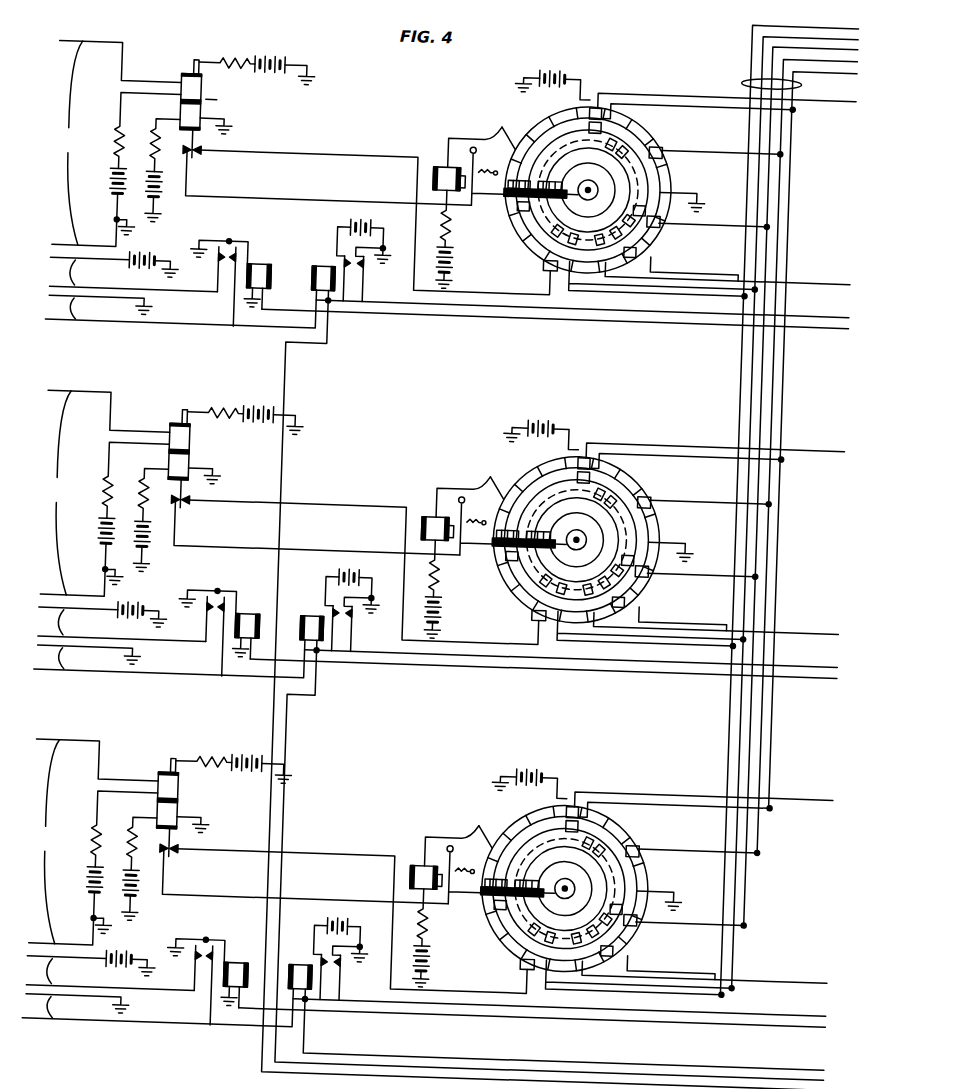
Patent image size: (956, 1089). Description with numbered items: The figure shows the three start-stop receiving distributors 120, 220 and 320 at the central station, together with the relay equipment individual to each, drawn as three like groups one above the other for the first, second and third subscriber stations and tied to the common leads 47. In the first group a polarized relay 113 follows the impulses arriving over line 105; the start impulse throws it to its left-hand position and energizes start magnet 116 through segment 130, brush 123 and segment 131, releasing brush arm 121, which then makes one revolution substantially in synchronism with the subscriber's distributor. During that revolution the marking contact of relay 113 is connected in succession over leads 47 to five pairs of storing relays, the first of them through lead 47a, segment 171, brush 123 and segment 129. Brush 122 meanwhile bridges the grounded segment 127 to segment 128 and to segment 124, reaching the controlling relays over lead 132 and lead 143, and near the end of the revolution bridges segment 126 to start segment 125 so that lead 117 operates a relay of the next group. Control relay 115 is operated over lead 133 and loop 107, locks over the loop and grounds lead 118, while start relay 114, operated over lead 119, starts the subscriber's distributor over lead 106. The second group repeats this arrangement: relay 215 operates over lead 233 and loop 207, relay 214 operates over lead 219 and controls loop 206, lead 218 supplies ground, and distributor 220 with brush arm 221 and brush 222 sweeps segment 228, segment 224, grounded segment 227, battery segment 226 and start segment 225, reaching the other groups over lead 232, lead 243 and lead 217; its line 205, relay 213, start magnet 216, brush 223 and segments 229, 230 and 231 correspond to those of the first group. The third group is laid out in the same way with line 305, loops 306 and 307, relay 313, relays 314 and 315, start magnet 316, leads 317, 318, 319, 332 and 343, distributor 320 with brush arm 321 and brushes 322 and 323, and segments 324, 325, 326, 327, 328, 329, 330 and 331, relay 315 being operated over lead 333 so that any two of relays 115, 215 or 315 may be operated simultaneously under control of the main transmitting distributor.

The leads 47 is at (740, 77).
The lead 47a is at (747, 44).
The line 105 is at (117, 144).
The lead 106 is at (134, 270).
The loop 107 is at (180, 305).
The relay 113 is at (180, 90).
The start relay 114 is at (264, 274).
The subscribers' control relay 115 is at (324, 274).
The start magnet 116 is at (438, 170).
The lead 117 is at (638, 93).
The lead 118 is at (410, 309).
The lead 119 is at (480, 321).
The start-stop receiving distributor 120 is at (590, 170).
The brush arm 121 is at (563, 188).
The brush 122 is at (540, 236).
The brush 123 is at (526, 214).
The segment 124 is at (646, 212).
The start segment 125 is at (585, 127).
The segment 126 is at (666, 140).
The segment 127 is at (646, 219).
The segment 128 is at (644, 246).
The segment 129 is at (662, 186).
The segment 130 is at (522, 156).
The segment 131 is at (540, 148).
The lead 132 is at (690, 321).
The lead 133 is at (293, 390).
The lead 143 is at (806, 276).
The segment 171 is at (546, 266).
The input signal leads 205 is at (105, 494).
The loop 206 is at (122, 620).
The loop 207 is at (169, 655).
The polarized relay 213 is at (193, 433).
The relay 214 is at (226, 632).
The relay 215 is at (334, 610).
The stepping magnet 216 is at (440, 554).
The lead 217 is at (715, 440).
The lead 218 is at (571, 675).
The lead 219 is at (543, 679).
The receiving distributor 220 is at (578, 507).
The brush arm 221 is at (512, 528).
The brush 222 is at (606, 615).
The contact segment 223 is at (485, 568).
The segment 224 is at (664, 579).
The start segment 225 is at (545, 465).
The segment 226 is at (704, 490).
The segment 227 is at (695, 578).
The segment 228 is at (670, 614).
The ground contact 229 is at (678, 541).
The contact 230 is at (495, 486).
The contact 231 is at (488, 470).
The lead 232 is at (691, 689).
The lead 233 is at (556, 864).
The lead 243 is at (717, 614).
The input signal leads 305 is at (94, 843).
The input lead 306 is at (110, 969).
The input lead 307 is at (157, 1004).
The polarized relay 313 is at (181, 782).
The relay 314 is at (214, 980).
The relay 315 is at (322, 959).
The stepping magnet 316 is at (429, 903).
The conductor 317 is at (705, 784).
The conductor 318 is at (395, 1015).
The conductor 319 is at (531, 1023).
The start-stop distributor 320 is at (566, 855).
The wiper arm 321 is at (500, 877).
The contact segment 322 is at (596, 964).
The contact segment 323 is at (480, 917).
The contact 324 is at (651, 924).
The contact 325 is at (514, 804).
The contact 326 is at (693, 834).
The contact 327 is at (684, 914).
The contact 328 is at (658, 962).
The ground contact 329 is at (668, 886).
The contact 330 is at (487, 830).
The contact 331 is at (477, 819).
The conductor 332 is at (560, 989).
The lead 333 is at (564, 1034).
The conductor 343 is at (705, 965).